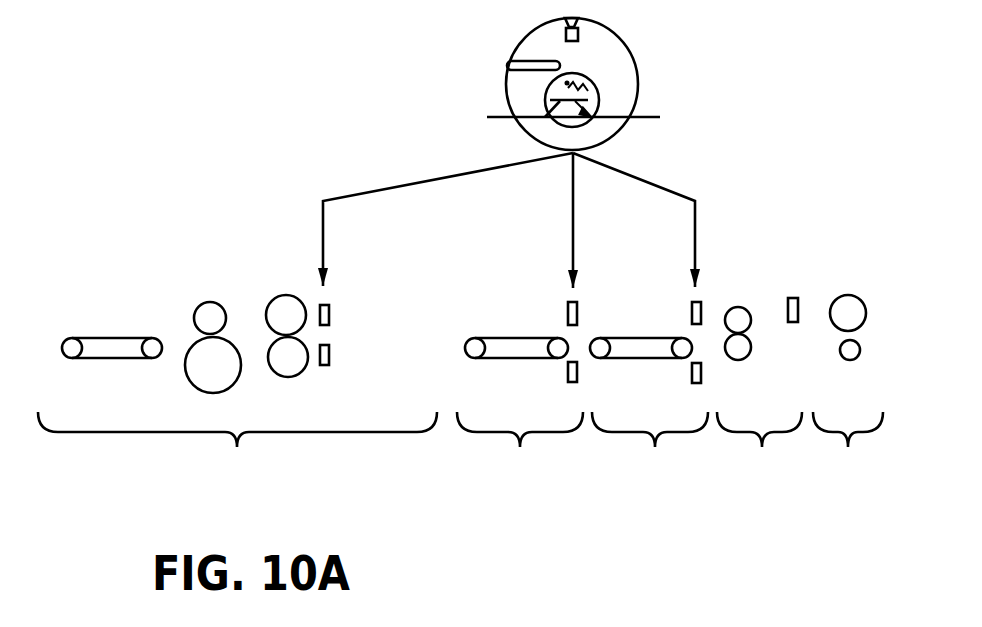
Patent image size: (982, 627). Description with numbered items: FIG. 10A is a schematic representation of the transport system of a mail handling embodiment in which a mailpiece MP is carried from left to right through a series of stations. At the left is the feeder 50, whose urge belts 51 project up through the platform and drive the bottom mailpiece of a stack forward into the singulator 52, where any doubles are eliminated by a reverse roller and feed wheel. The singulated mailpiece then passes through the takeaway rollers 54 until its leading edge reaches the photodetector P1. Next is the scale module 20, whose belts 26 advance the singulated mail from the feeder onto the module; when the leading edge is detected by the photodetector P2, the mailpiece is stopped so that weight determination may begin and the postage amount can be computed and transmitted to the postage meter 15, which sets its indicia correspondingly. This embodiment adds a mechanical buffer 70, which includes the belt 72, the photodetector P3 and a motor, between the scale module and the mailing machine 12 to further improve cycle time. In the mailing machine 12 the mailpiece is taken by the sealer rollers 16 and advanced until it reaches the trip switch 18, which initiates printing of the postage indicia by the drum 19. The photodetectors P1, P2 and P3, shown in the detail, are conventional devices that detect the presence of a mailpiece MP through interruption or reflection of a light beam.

The mailpiece MP is at (533, 62).
The urge belts 51 is at (90, 318).
The singulator 52 is at (195, 297).
The takeaway rollers 54 is at (277, 282).
The photodetector P1 is at (335, 300).
The belts 26 is at (500, 335).
The photodetector P2 is at (565, 308).
The belt 72 is at (637, 335).
The photodetector P3 is at (688, 308).
The sealer rollers 16 is at (735, 307).
The trip switch 18 is at (793, 298).
The drum 19 is at (845, 295).
The feeder 50 is at (237, 449).
The scale module 20 is at (520, 449).
The mechanical buffer 70 is at (650, 449).
The mailing machine 12 is at (759, 449).
The postage meter 15 is at (848, 449).